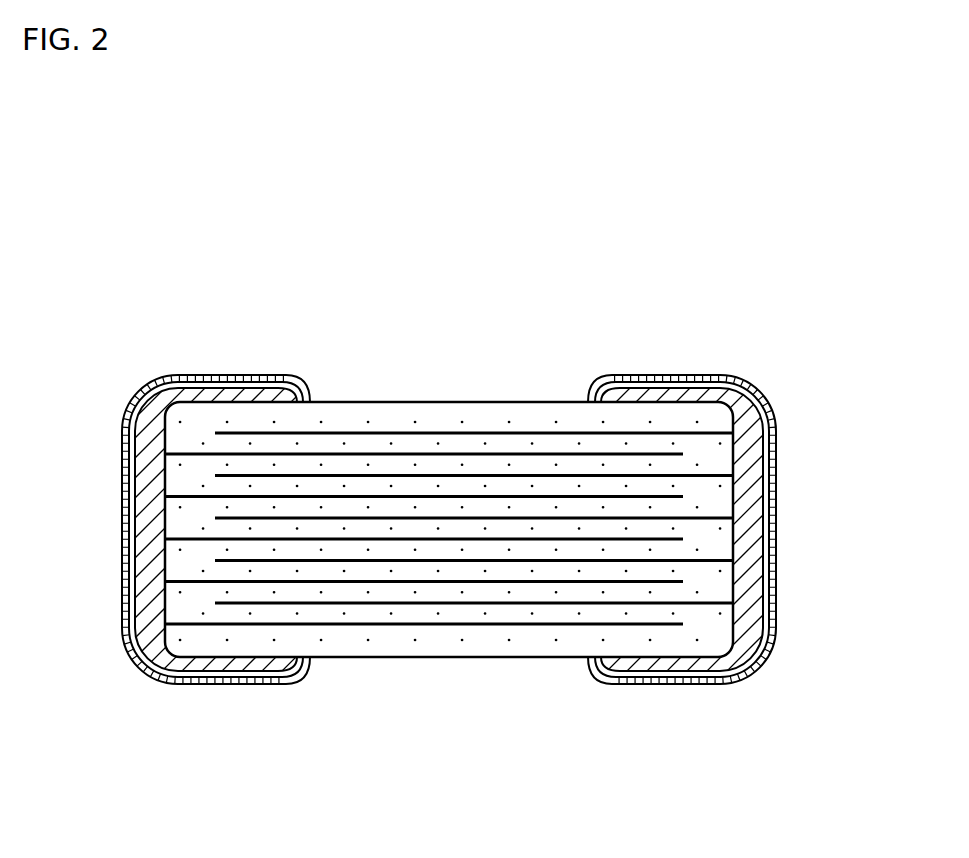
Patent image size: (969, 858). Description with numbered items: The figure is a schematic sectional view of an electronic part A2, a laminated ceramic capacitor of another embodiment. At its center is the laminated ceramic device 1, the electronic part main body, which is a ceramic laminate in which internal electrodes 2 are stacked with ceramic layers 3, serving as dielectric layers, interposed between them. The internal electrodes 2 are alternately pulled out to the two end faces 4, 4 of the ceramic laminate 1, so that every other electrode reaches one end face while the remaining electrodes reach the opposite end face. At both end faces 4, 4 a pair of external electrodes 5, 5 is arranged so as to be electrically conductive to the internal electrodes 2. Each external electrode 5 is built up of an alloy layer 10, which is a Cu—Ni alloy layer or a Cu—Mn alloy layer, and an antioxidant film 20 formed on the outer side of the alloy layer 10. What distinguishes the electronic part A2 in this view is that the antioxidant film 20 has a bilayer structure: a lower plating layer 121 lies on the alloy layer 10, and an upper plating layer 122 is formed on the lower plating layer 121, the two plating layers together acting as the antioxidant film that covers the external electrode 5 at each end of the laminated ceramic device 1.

The electronic part A2 is at (504, 306).
The laminated ceramic device 1 is at (407, 388).
The internal electrodes 2 is at (355, 627).
The ceramic layers 3 is at (531, 605).
The end faces 4 is at (160, 457).
The external electrodes 5 is at (117, 402).
The alloy layer 10 is at (160, 540).
The antioxidant film 20 is at (183, 752).
The lower plating layer 121 is at (163, 670).
The upper plating layer 122 is at (128, 592).